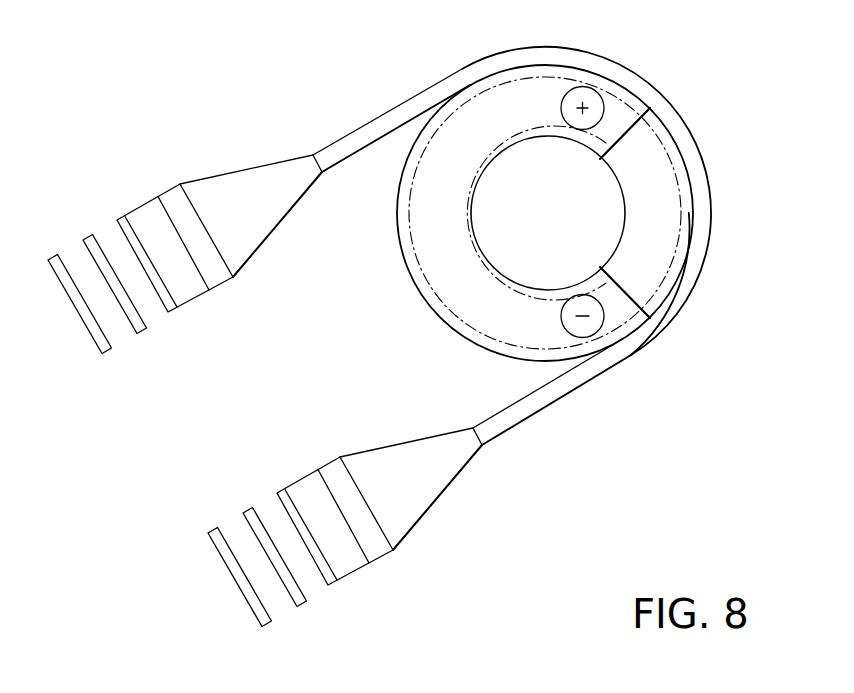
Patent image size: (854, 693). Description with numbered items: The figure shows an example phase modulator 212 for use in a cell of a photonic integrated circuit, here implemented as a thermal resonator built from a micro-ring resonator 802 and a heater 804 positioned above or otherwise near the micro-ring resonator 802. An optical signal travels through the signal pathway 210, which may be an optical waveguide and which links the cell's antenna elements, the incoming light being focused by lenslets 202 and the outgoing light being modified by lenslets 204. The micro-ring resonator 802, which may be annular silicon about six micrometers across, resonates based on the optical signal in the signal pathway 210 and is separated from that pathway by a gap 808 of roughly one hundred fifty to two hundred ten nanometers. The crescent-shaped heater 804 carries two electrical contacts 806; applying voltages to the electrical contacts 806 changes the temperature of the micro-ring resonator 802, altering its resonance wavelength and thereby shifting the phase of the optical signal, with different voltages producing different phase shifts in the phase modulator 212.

The lenslets 202 is at (227, 134).
The lenslets 204 is at (518, 547).
The signal pathway 210 is at (663, 332).
The phase modulator 212 is at (412, 344).
The micro-ring resonator 802 is at (691, 256).
The heater 804 is at (402, 262).
The electrical contacts 806 is at (567, 91).
The gap 808 is at (670, 127).